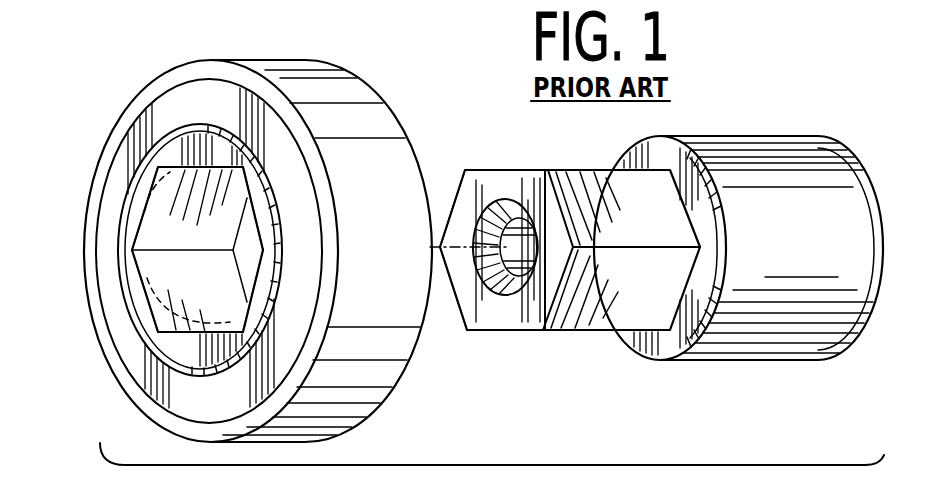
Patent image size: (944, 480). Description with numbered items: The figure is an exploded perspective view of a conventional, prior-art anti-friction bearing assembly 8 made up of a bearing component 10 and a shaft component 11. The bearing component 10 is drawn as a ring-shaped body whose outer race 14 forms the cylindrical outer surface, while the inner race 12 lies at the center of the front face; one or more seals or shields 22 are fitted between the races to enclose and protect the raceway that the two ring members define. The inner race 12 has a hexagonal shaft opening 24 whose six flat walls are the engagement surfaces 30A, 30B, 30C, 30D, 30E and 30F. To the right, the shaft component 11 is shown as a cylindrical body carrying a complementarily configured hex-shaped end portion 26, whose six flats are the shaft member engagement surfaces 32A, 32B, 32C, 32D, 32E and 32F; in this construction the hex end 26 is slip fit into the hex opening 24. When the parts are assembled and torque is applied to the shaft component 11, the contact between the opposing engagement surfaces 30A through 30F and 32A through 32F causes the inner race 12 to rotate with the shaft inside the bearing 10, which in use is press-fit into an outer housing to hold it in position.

The anti-friction bearing assembly 8 is at (545, 465).
The bearing component 10 is at (197, 56).
The shaft component 11 is at (812, 134).
The inner race 12 is at (142, 185).
The outer race 14 is at (243, 78).
The seal or shield 22 is at (163, 123).
The hexagonal shaft opening 24 is at (163, 263).
The hex-shaped end portion 26 is at (577, 167).
The engagement surface 30A is at (228, 172).
The engagement surface 30B is at (257, 236).
The engagement surface 30C is at (222, 322).
The engagement surface 30D is at (193, 333).
The engagement surface 30E is at (218, 283).
The engagement surface 30F is at (218, 243).
The shaft member engagement surface 32A is at (520, 167).
The shaft member engagement surface 32B is at (675, 210).
The shaft member engagement surface 32C is at (680, 280).
The shaft member engagement surface 32D is at (520, 331).
The shaft member engagement surface 32E is at (453, 295).
The shaft member engagement surface 32F is at (458, 193).